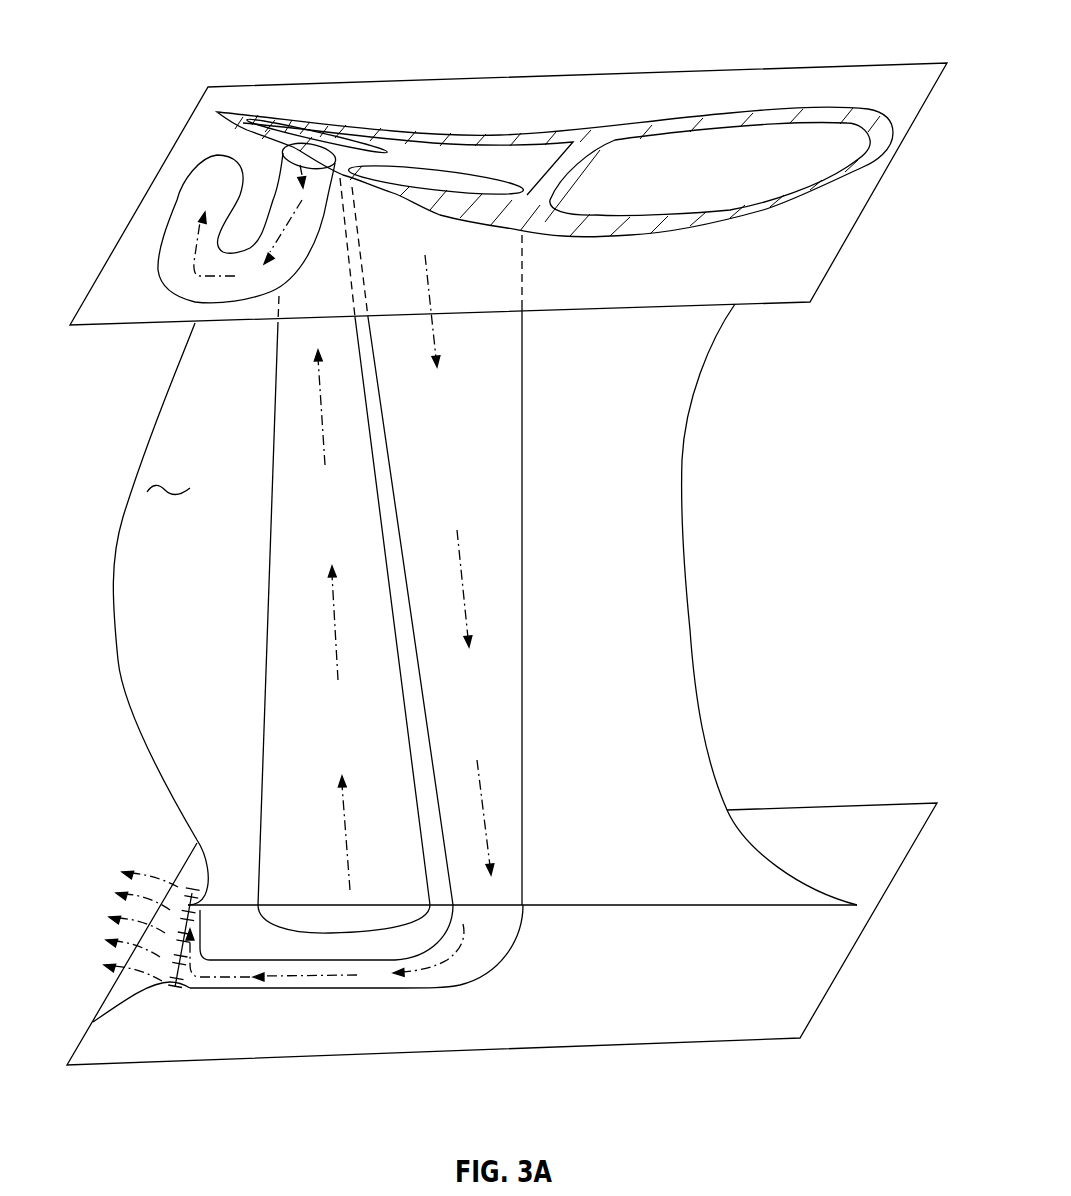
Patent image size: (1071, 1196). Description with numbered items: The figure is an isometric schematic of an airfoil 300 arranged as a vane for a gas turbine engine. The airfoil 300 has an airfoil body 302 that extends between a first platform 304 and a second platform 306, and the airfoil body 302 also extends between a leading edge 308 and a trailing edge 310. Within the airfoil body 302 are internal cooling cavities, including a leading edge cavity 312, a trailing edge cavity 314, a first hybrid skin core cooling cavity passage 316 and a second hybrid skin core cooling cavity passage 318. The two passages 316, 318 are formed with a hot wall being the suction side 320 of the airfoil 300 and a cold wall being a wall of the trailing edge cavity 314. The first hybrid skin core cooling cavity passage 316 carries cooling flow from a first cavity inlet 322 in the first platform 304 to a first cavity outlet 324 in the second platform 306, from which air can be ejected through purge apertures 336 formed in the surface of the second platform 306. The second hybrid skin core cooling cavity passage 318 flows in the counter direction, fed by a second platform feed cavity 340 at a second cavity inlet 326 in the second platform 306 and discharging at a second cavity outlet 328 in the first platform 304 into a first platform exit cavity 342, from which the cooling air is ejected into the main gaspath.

The airfoil 300 is at (152, 30).
The airfoil body 302 is at (175, 378).
The first platform 304 is at (793, 78).
The second platform 306 is at (635, 1027).
The leading edge 308 is at (690, 608).
The trailing edge 310 is at (120, 668).
The leading edge cavity 312 is at (732, 185).
The trailing edge cavity 314 is at (478, 158).
The first hybrid skin core cooling cavity passage 316 is at (505, 463).
The second hybrid skin core cooling cavity passage 318 is at (288, 748).
The suction side 320 is at (168, 488).
The first cavity inlet 322 is at (416, 178).
The first cavity outlet 324 is at (465, 925).
The second cavity inlet 326 is at (332, 925).
The second cavity outlet 328 is at (303, 146).
The purge apertures 336 is at (178, 884).
The second platform feed cavity 340 is at (183, 990).
The first platform exit cavity 342 is at (190, 226).